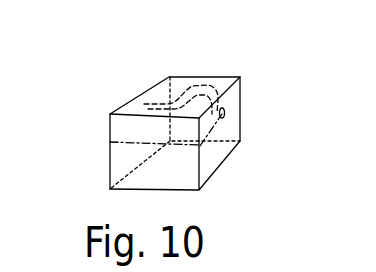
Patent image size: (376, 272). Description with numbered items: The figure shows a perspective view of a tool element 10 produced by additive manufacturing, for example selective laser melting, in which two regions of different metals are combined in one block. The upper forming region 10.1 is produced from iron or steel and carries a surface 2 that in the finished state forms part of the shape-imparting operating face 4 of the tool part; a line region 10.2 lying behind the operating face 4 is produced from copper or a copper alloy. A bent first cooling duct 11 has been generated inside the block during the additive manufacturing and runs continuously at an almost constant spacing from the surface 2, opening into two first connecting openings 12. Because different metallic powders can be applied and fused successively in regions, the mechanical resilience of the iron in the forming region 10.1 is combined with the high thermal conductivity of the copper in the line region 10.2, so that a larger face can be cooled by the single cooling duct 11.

The surface 2 is at (164, 68).
The shape-imparting operating face 4 is at (166, 97).
The tool element 10 is at (239, 88).
The forming region 10.1 is at (108, 126).
The line region 10.2 is at (108, 168).
The first cooling duct 11 is at (196, 85).
The first connecting openings 12 is at (146, 106).